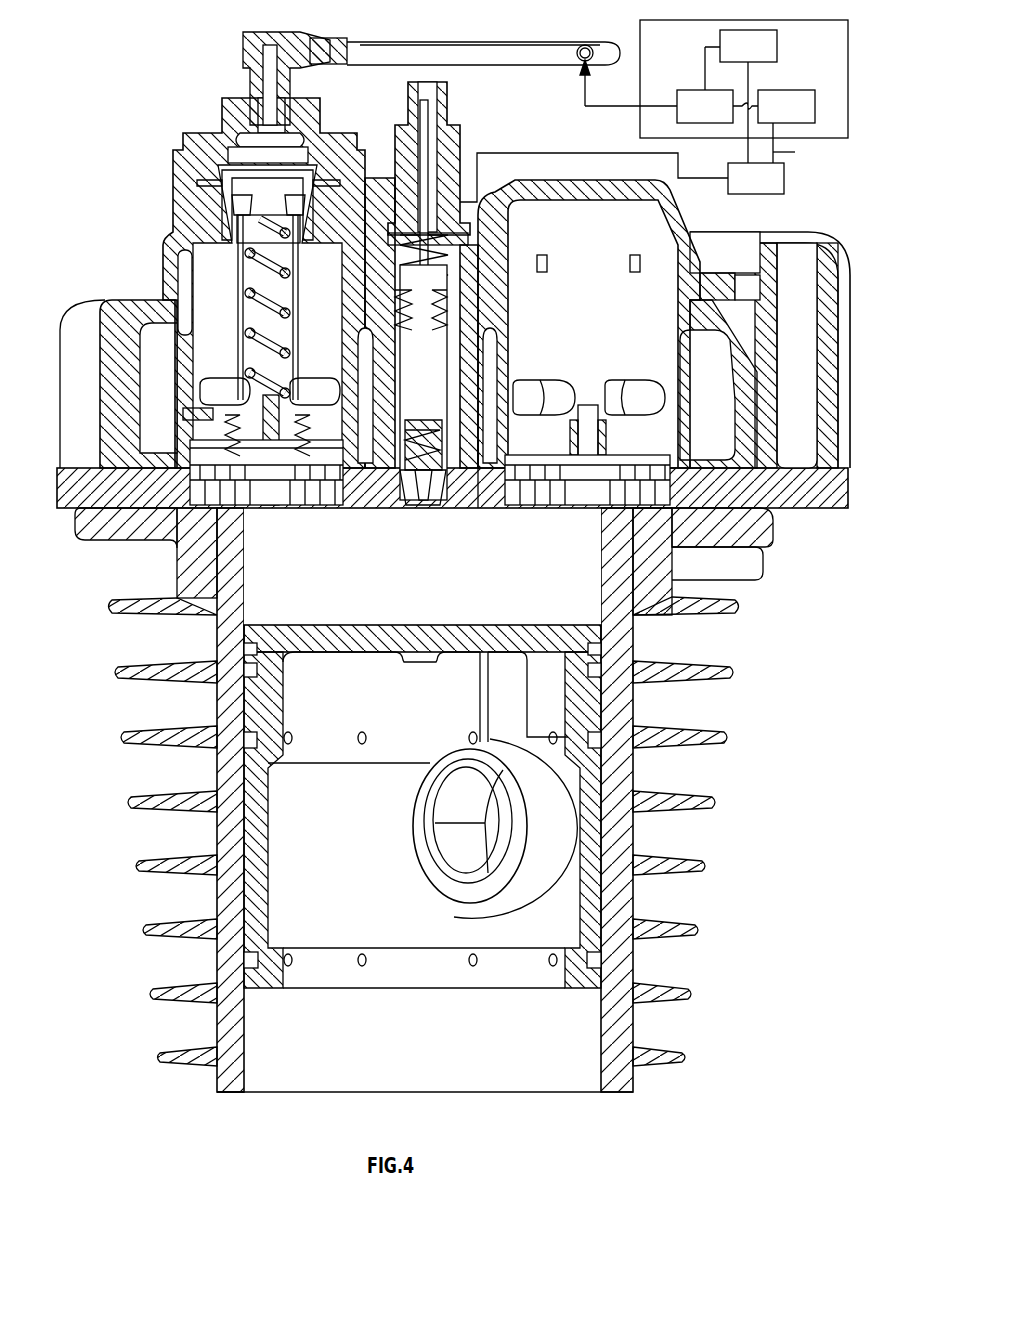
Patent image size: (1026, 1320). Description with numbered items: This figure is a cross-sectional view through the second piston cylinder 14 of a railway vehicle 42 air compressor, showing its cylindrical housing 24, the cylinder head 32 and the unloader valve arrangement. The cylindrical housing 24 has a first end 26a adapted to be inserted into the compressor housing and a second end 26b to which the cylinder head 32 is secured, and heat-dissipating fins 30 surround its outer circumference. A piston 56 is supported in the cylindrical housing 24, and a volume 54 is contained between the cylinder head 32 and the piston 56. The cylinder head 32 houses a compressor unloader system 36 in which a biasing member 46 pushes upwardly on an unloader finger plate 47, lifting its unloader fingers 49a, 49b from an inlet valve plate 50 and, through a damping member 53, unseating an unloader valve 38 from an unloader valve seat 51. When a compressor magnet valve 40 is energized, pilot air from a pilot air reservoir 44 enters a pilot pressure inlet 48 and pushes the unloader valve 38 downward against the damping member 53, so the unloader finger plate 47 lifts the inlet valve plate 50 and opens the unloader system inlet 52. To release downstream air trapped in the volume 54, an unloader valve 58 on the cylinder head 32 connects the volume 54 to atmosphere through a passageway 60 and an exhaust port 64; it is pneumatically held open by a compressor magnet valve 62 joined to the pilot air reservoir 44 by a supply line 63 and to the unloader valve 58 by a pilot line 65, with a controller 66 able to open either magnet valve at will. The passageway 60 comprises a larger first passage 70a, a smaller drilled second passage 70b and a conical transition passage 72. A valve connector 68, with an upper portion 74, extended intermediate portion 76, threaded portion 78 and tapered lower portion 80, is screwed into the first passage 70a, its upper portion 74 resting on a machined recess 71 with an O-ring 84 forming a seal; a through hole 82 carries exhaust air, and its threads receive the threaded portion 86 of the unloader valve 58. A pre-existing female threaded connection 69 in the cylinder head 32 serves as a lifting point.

The second piston cylinder 14 is at (417, 835).
The cylindrical housing 24 is at (212, 912).
The first end 26a is at (232, 1095).
The second end 26b is at (80, 530).
The heat-dissipating fins 30 is at (712, 801).
The cylinder head 32 is at (476, 306).
The compressor unloader system 36 is at (237, 318).
The unloader valve 38 is at (230, 180).
The compressor magnet valve 40 is at (690, 90).
The railway vehicle 42 is at (734, 127).
The pilot air reservoir 44 is at (790, 86).
The biasing member 46 is at (225, 430).
The unloader finger plate 47 is at (232, 420).
The pilot pressure inlet 48 is at (258, 55).
The unloader finger 49a is at (150, 450).
The unloader finger 49b is at (325, 505).
The inlet valve plate 50 is at (215, 545).
The unloader valve seat 51 is at (215, 165).
The unloader system inlet 52 is at (270, 505).
The damping member 53 is at (250, 295).
The volume 54 is at (568, 595).
The piston 56 is at (580, 705).
The unloader valve 58 is at (447, 125).
The passageway 60 is at (445, 360).
The compressor magnet valve 62 is at (770, 194).
The supply line 63 is at (803, 153).
The exhaust port 64 is at (410, 78).
The pilot line 65 is at (632, 153).
The controller 66 is at (778, 40).
The valve connector 68 is at (510, 270).
The pre-existing female threaded connection 69 is at (395, 310).
The first passage 70a is at (380, 345).
The second passage 70b is at (432, 498).
The recess 71 is at (400, 235).
The transition passage 72 is at (372, 495).
The upper portion 74 is at (450, 258).
The extended intermediate portion 76 is at (470, 385).
The threaded portion 78 is at (482, 508).
The tapered lower portion 80 is at (416, 492).
The through hole 82 is at (528, 512).
The O-ring 84 is at (512, 283).
The threaded portion 86 is at (405, 235).